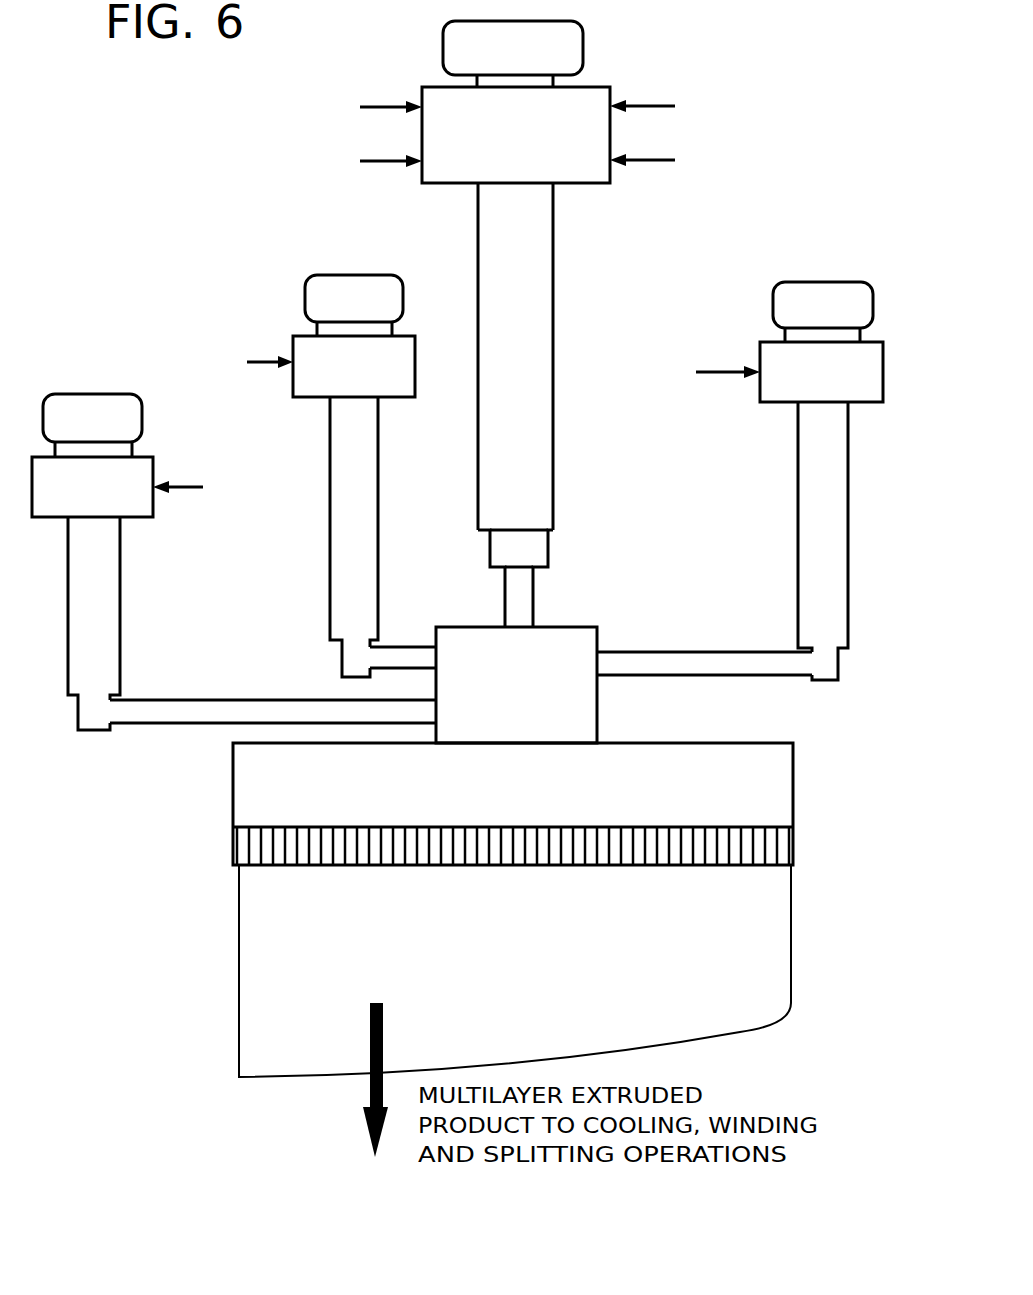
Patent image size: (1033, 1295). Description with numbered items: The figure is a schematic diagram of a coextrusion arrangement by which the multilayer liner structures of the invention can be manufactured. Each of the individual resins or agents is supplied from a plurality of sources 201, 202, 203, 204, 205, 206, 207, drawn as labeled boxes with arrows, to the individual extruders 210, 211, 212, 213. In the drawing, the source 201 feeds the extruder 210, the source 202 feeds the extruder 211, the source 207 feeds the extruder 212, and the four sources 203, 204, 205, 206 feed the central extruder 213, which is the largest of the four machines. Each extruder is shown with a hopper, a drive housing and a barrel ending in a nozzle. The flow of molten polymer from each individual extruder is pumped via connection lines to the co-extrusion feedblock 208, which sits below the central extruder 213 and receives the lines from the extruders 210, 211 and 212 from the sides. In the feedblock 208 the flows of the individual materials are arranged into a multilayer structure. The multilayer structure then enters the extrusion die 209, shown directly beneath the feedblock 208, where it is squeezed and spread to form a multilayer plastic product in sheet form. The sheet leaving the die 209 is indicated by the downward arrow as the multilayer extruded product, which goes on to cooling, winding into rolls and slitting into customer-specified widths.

The source 201 is at (234, 366).
The source 202 is at (215, 484).
The source 203 is at (355, 106).
The source 204 is at (355, 162).
The source 205 is at (678, 102).
The source 206 is at (678, 161).
The source 207 is at (691, 373).
The co-extrusion feedblock 208 is at (583, 657).
The extrusion die 209 is at (768, 770).
The extruder 210 is at (352, 602).
The extruder 211 is at (107, 657).
The extruder 212 is at (813, 547).
The extruder 213 is at (538, 348).